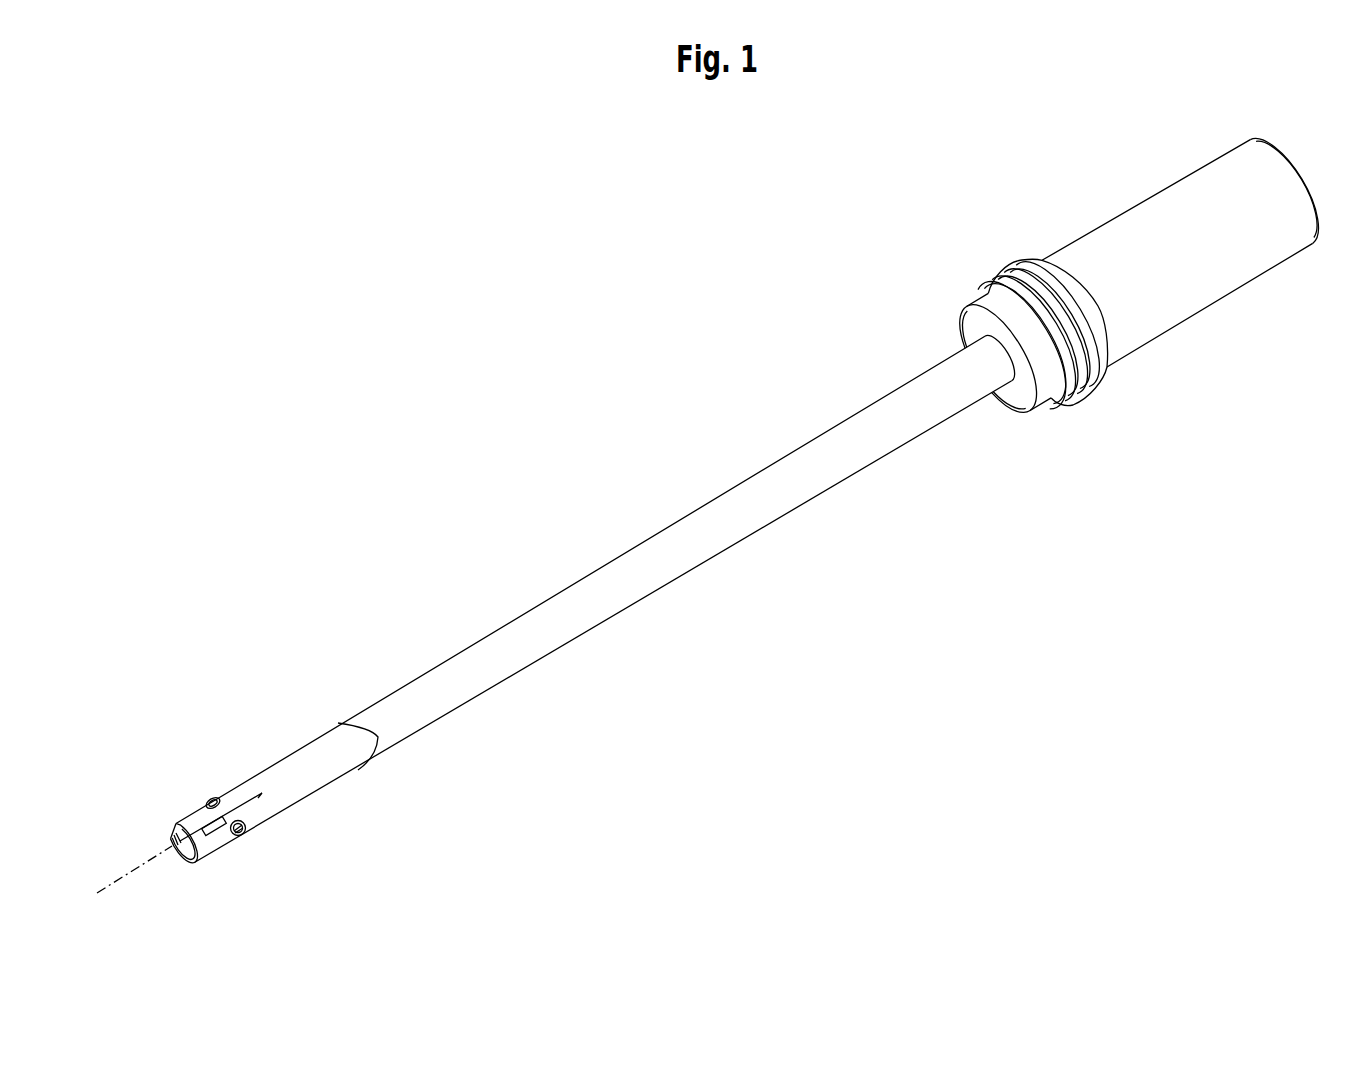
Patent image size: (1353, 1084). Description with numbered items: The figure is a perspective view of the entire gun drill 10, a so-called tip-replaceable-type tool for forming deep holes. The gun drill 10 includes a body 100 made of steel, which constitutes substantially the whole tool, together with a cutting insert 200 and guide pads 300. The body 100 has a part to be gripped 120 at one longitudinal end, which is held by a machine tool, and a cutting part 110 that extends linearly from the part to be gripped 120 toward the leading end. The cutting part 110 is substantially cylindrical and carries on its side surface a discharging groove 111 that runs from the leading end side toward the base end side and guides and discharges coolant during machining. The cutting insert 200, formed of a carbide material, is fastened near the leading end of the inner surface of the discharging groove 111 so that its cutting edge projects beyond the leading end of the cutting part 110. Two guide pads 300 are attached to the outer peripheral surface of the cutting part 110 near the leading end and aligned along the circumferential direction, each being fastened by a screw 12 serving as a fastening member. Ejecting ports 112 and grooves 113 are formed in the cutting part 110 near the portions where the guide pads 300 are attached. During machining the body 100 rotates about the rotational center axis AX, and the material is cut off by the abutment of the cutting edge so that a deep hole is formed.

The gun drill 10 is at (1068, 137).
The body 100 is at (694, 476).
The cutting part 110 is at (615, 577).
The discharging groove 111 is at (192, 857).
The ejecting ports 112 is at (262, 793).
The grooves 113 is at (232, 790).
The screw 12 is at (218, 798).
The guide pads 300 is at (198, 812).
The cutting insert 200 is at (170, 842).
The part to be gripped 120 is at (1143, 217).
The rotational center axis AX is at (113, 887).